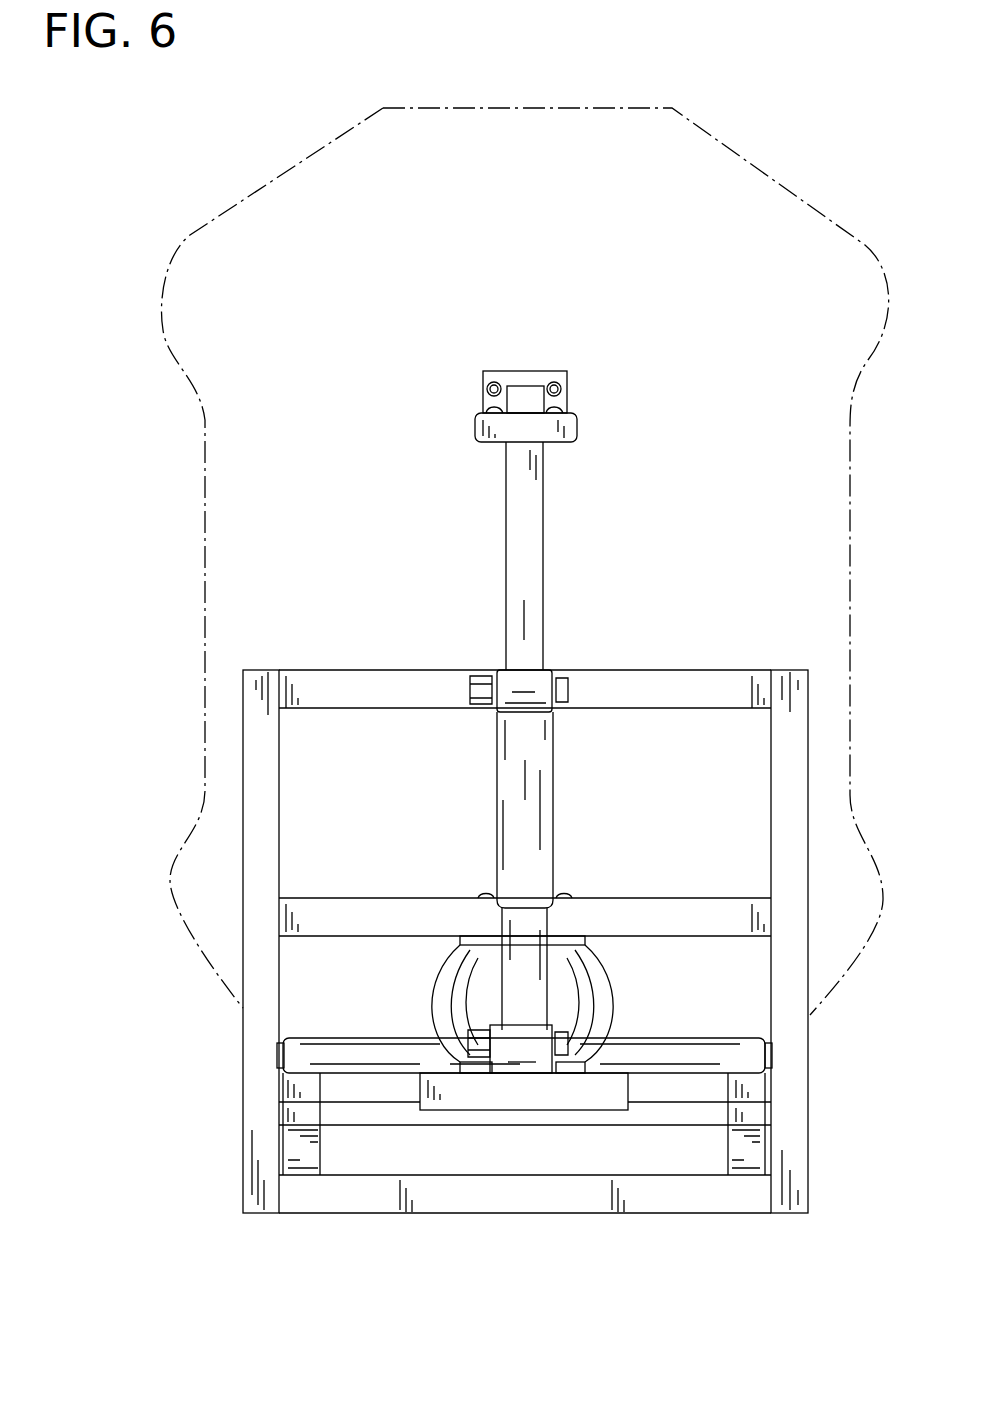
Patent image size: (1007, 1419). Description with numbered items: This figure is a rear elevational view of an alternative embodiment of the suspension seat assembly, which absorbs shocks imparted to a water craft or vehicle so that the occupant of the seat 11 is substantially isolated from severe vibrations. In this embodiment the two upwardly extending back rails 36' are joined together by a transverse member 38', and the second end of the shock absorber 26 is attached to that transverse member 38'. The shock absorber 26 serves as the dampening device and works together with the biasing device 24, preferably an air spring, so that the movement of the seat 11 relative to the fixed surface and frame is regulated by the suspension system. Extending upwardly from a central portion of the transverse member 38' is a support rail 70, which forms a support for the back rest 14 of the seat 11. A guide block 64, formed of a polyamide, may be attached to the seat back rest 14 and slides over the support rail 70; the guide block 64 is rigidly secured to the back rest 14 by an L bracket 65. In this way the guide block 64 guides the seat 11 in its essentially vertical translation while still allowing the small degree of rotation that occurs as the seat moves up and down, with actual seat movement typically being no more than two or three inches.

The seat 11 is at (712, 170).
The back rest 14 is at (248, 256).
The L bracket 65 is at (527, 370).
The guide block 64 is at (578, 432).
The support rail 70 is at (520, 540).
The transverse member 38' is at (453, 677).
The back rails 36' is at (526, 941).
The shock absorber 26 is at (540, 828).
The biasing device 24 is at (570, 1003).